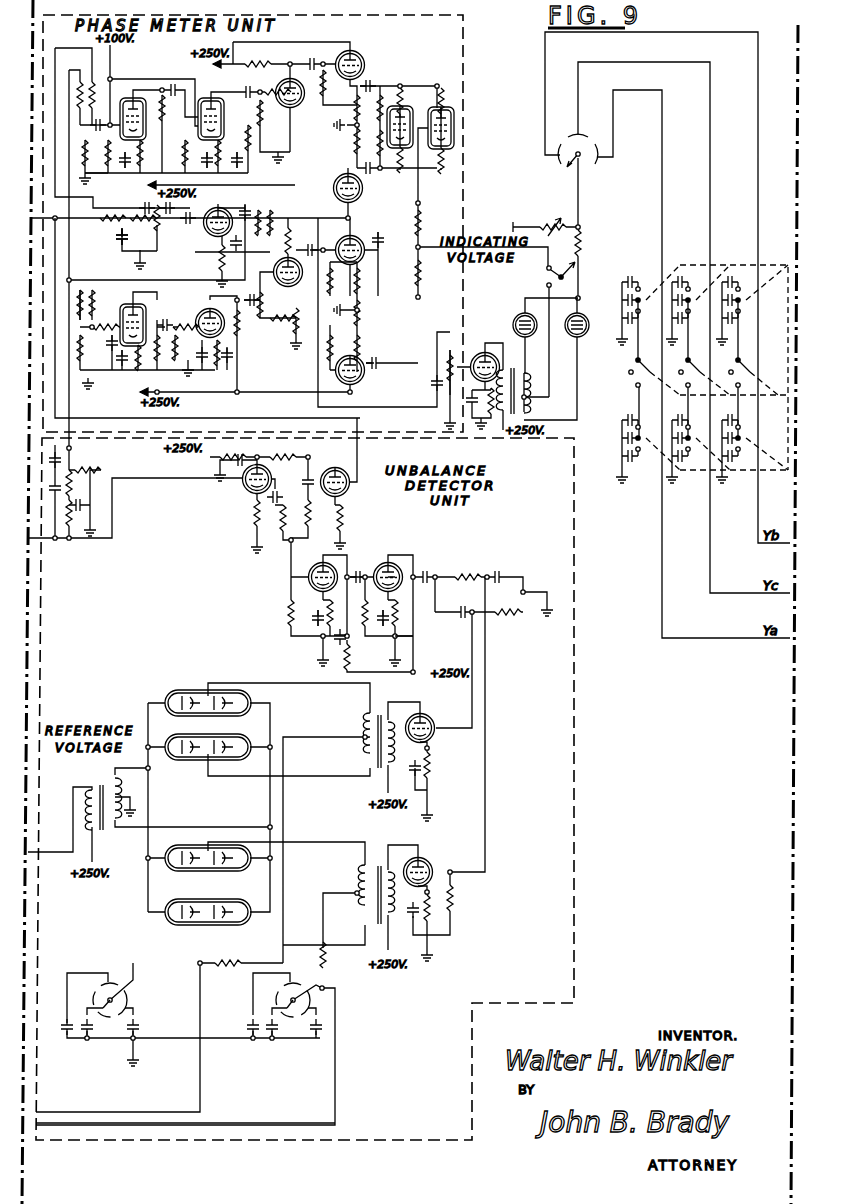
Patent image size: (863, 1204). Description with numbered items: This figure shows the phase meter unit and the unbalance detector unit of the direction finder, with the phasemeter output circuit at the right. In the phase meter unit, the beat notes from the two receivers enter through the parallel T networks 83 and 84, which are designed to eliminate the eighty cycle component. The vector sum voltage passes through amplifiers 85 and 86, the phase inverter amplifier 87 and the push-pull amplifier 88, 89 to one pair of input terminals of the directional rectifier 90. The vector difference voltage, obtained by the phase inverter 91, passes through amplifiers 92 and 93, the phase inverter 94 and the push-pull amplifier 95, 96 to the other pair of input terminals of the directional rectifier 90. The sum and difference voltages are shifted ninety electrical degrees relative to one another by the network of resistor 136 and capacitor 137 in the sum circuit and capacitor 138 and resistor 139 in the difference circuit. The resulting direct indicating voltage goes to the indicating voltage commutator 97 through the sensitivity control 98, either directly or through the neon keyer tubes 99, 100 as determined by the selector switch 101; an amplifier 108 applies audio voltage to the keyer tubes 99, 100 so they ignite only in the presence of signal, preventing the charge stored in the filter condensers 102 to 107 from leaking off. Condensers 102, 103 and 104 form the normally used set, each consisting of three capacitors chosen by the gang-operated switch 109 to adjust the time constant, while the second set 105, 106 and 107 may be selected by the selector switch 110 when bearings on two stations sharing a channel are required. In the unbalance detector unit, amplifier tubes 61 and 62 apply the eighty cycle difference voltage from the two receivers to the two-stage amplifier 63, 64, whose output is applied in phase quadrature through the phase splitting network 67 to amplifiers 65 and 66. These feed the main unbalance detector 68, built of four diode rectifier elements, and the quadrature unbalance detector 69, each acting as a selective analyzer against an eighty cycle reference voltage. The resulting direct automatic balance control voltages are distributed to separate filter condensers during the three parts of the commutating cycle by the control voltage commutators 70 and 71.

The amplifier tube 61 is at (350, 493).
The amplifier tube 62 is at (250, 490).
The two-stage amplifier 63 is at (313, 568).
The two-stage amplifier 64 is at (404, 568).
The amplifier 65 is at (446, 713).
The amplifier 66 is at (432, 866).
The phase splitting network 67 is at (501, 594).
The main unbalance detector 68 is at (208, 885).
The quadrature unbalance detector 69 is at (208, 725).
The control voltage commutator 70 is at (305, 978).
The control voltage commutator 71 is at (118, 973).
The parallel T network 83 is at (92, 488).
The parallel T network 84 is at (143, 241).
The amplifier 85 is at (128, 95).
The amplifier 86 is at (204, 95).
The phase inverter amplifier 87 is at (293, 70).
The push-pull amplifier 88 is at (363, 66).
The push-pull amplifier 89 is at (363, 188).
The directional rectifier 90 is at (420, 120).
The phase inverter 91 is at (212, 216).
The amplifier 92 is at (148, 312).
The amplifier 93 is at (196, 322).
The phase inverter 94 is at (276, 270).
The push-pull amplifier 95 is at (366, 240).
The push-pull amplifier 96 is at (364, 378).
The indicating voltage commutator 97 is at (603, 156).
The sensitivity control 98 is at (559, 229).
The neon keyer tube 99 is at (521, 318).
The neon keyer tube 100 is at (597, 330).
The selector switch 101 is at (545, 271).
The filter condenser 102 is at (648, 270).
The filter condenser 103 is at (688, 262).
The filter condenser 104 is at (740, 258).
The filter condenser 105 is at (614, 448).
The filter condenser 106 is at (686, 476).
The filter condenser 107 is at (738, 478).
The amplifier 108 is at (471, 352).
The gang-operated switch 109 is at (778, 478).
The selector switch 110 is at (778, 394).
The resistor 136 is at (100, 158).
The capacitor 137 is at (100, 110).
The capacitor 138 is at (110, 345).
The resistor 139 is at (100, 318).